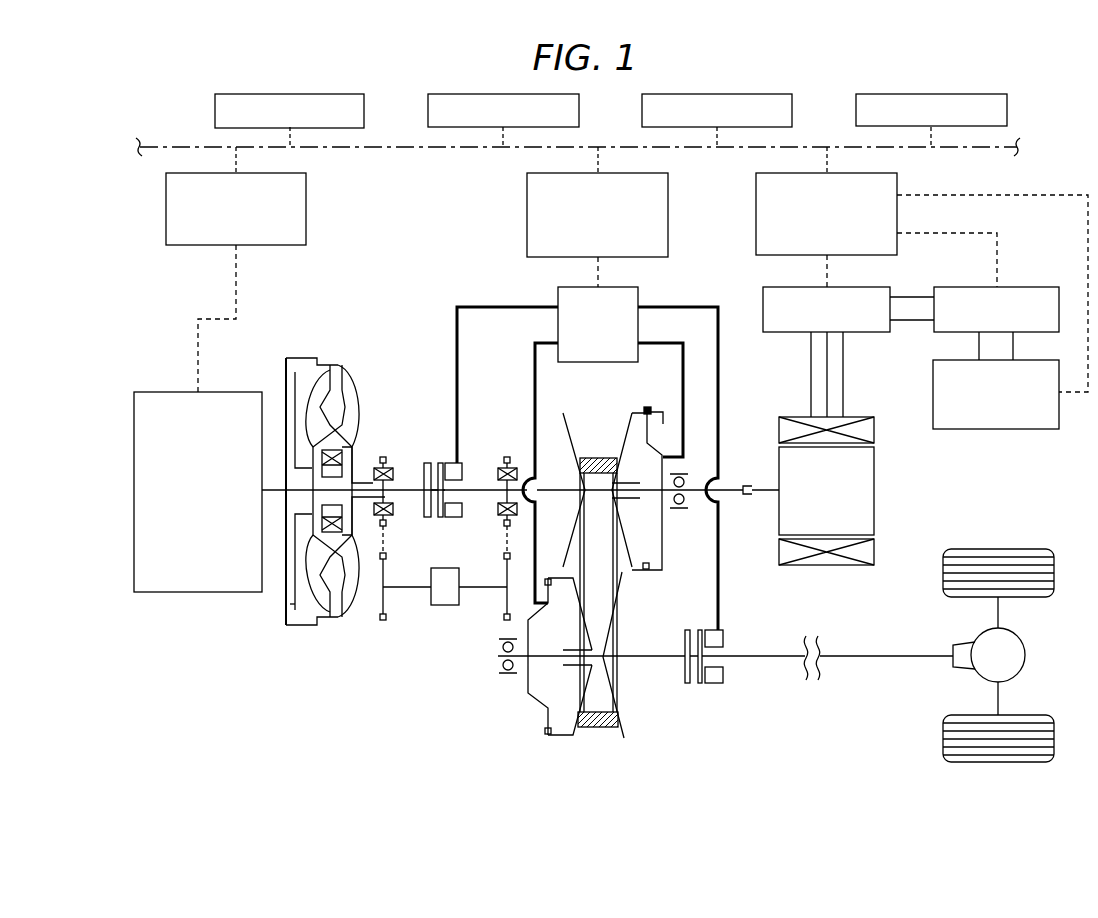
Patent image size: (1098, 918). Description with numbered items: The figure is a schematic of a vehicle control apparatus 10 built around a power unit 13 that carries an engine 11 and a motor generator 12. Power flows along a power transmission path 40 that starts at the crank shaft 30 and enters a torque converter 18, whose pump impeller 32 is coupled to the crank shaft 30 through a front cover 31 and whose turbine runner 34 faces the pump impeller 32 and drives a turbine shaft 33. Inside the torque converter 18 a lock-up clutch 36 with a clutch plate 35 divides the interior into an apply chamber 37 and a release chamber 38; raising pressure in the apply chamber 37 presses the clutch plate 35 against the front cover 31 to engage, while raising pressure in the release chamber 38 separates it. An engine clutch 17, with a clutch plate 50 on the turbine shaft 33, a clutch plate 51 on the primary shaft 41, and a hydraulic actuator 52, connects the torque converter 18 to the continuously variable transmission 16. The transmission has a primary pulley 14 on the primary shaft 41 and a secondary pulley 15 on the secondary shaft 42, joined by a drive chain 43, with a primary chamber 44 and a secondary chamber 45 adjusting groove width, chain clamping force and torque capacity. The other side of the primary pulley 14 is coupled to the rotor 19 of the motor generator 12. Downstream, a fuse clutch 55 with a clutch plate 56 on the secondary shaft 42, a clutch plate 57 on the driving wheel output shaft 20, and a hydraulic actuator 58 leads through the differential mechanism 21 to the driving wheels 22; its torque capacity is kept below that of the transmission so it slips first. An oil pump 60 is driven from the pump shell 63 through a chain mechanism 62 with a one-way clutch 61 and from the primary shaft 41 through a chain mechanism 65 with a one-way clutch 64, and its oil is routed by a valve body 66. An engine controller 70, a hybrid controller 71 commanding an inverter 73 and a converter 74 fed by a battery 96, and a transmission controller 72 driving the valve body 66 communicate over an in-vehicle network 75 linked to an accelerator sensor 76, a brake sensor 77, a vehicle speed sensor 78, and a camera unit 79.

The vehicle control apparatus 10 is at (154, 116).
The engine 11 is at (163, 392).
The motor generator 12 is at (880, 489).
The power unit 13 is at (225, 663).
The primary pulley 14 is at (647, 407).
The secondary pulley 15 is at (546, 724).
The continuously variable transmission 16 is at (510, 703).
The engine clutch 17 is at (462, 458).
The torque converter 18 is at (356, 352).
The rotor 19 is at (780, 470).
The driving wheel output shaft 20 is at (781, 660).
The differential mechanism 21 is at (1026, 650).
The driving wheels 22 is at (1042, 549).
The crank shaft 30 is at (275, 490).
The front cover 31 is at (282, 523).
The pump impeller 32 is at (350, 383).
The turbine shaft 33 is at (360, 483).
The turbine runner 34 is at (312, 392).
The clutch plate 35 is at (295, 552).
The lock-up clutch 36 is at (285, 355).
The apply chamber 37 is at (302, 616).
The release chamber 38 is at (290, 600).
The power transmission path 40 is at (551, 485).
The primary shaft 41 is at (560, 503).
The secondary shaft 42 is at (645, 655).
The drive chain 43 is at (600, 728).
The primary chamber 44 is at (650, 523).
The secondary chamber 45 is at (560, 728).
The clutch plate 50 is at (426, 462).
The clutch plate 51 is at (440, 462).
The hydraulic actuator 52 is at (455, 518).
The fuse clutch 55 is at (729, 632).
The clutch plate 56 is at (688, 685).
The clutch plate 57 is at (700, 685).
The hydraulic actuator 58 is at (725, 678).
The oil pump 60 is at (434, 606).
The one-way clutch 61 is at (386, 525).
The chain mechanism 62 is at (372, 626).
The pump shell 63 is at (332, 366).
The one-way clutch 64 is at (508, 462).
The chain mechanism 65 is at (500, 629).
The valve body 66 is at (558, 295).
The engine controller 70 is at (166, 195).
The hybrid controller 71 is at (756, 195).
The transmission controller 72 is at (527, 195).
The inverter 73 is at (763, 295).
The converter 74 is at (1033, 287).
The in-vehicle network 75 is at (388, 150).
The accelerator sensor 76 is at (215, 108).
The brake sensor 77 is at (428, 108).
The vehicle speed sensor 78 is at (642, 108).
The camera unit 79 is at (856, 108).
The battery 96 is at (933, 381).